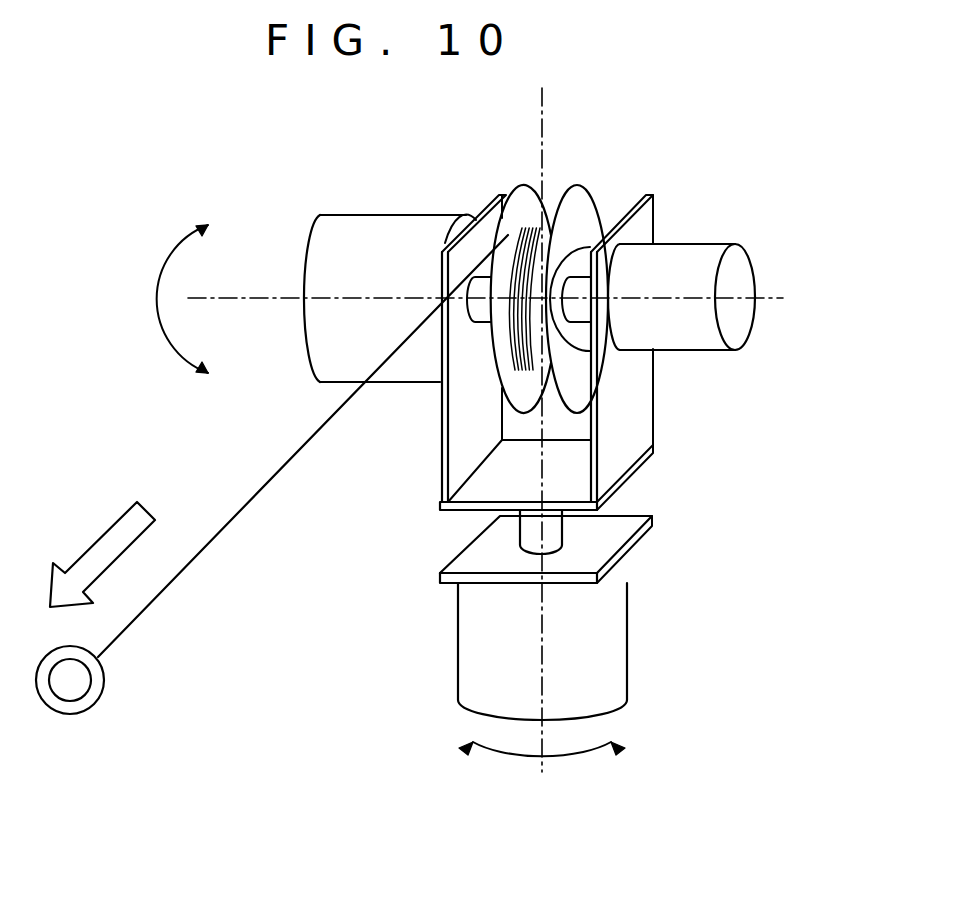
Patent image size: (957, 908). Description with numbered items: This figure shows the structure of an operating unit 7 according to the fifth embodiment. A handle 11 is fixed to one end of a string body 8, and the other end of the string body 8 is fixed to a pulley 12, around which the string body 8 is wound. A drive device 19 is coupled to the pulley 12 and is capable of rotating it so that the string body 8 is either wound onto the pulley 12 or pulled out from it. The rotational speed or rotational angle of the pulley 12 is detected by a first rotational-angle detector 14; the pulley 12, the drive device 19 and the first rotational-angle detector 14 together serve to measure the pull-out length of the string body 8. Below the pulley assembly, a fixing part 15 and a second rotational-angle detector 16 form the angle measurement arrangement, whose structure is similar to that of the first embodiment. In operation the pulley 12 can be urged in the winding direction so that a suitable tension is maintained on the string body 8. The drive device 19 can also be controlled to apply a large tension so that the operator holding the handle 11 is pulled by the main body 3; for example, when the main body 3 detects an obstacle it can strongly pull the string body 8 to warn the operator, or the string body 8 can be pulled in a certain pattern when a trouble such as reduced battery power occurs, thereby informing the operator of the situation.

The first rotational-angle detector 14 is at (377, 257).
The pulley 12 is at (573, 193).
The drive device 19 is at (678, 263).
The fixing part 15 is at (627, 400).
The main body 3 is at (620, 528).
The second rotational-angle detector 16 is at (605, 653).
The string body 8 is at (202, 550).
The handle 11 is at (73, 692).
The operating unit 7 is at (177, 812).